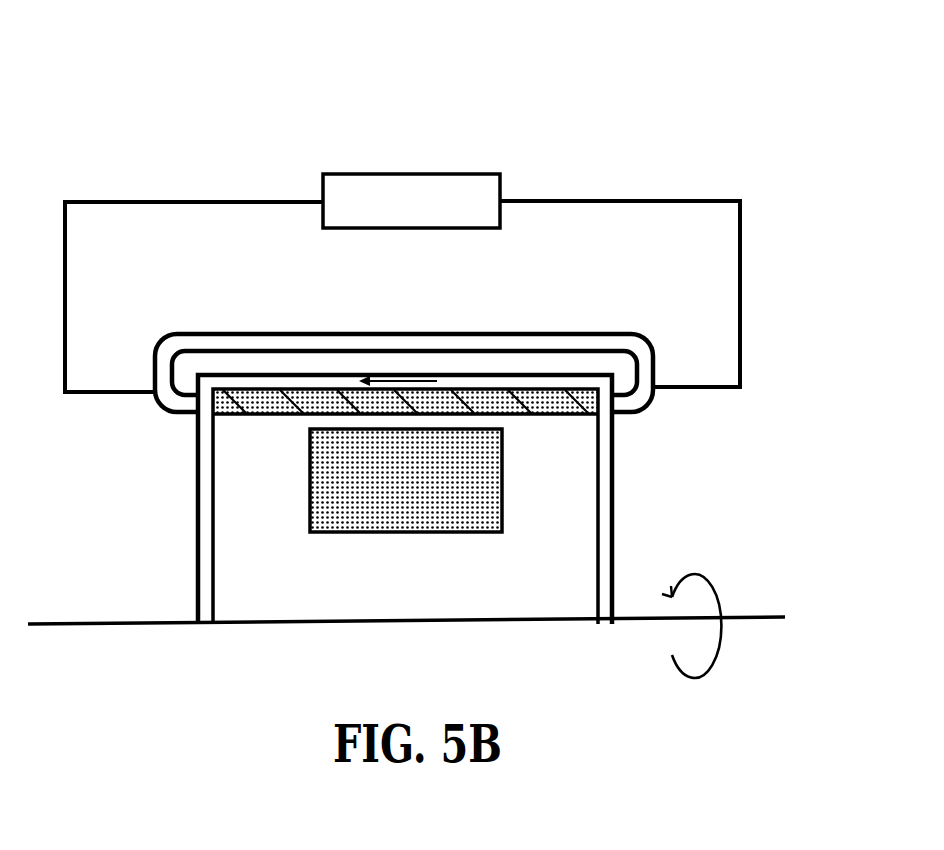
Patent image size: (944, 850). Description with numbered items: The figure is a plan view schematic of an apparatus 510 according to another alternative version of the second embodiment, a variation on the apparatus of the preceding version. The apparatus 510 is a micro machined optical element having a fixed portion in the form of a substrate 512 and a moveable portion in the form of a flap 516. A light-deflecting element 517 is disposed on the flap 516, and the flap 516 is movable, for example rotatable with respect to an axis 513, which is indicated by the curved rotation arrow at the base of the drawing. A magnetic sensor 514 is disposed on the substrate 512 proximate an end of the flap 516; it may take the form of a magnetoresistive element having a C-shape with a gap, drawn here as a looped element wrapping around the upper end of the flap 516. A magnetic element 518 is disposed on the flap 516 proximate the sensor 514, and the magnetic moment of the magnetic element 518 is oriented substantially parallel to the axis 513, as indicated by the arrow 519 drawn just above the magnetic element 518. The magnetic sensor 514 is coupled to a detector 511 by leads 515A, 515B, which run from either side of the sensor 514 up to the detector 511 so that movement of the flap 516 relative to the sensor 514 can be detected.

The apparatus 510 is at (698, 84).
The detector 511 is at (395, 174).
The substrate 512 is at (103, 503).
The axis 513 is at (766, 618).
The magnetic sensor 514 is at (258, 334).
The lead 515A is at (160, 202).
The lead 515B is at (632, 200).
The flap 516 is at (213, 568).
The light-deflecting element 517 is at (440, 533).
The magnetic element 518 is at (267, 416).
The arrow 519 is at (403, 381).